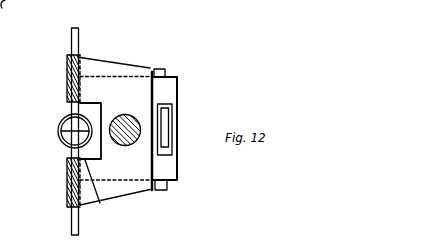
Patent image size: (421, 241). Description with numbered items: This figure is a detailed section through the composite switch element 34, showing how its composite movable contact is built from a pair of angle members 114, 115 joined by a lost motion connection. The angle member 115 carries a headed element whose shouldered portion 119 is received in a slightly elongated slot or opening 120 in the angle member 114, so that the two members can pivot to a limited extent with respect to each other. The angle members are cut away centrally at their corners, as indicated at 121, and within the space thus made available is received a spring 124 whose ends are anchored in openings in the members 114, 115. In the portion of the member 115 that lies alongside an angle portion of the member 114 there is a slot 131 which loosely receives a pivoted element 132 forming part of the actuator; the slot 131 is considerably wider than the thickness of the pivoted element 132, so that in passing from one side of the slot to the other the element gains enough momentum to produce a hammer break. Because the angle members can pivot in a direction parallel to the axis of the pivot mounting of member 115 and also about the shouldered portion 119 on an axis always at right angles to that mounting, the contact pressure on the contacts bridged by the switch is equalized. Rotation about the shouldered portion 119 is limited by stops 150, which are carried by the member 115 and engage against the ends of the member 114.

The composite switch element 34 is at (140, 45).
The angle member 114 is at (67, 67).
The angle member 115 is at (81, 35).
The shouldered portion 119 is at (124, 114).
The slot or opening 120 is at (152, 115).
The cut away corner 121 is at (102, 195).
The spring 124 is at (60, 119).
The slot 131 is at (168, 116).
The pivoted element 132 is at (164, 147).
The stops 150 is at (160, 68).